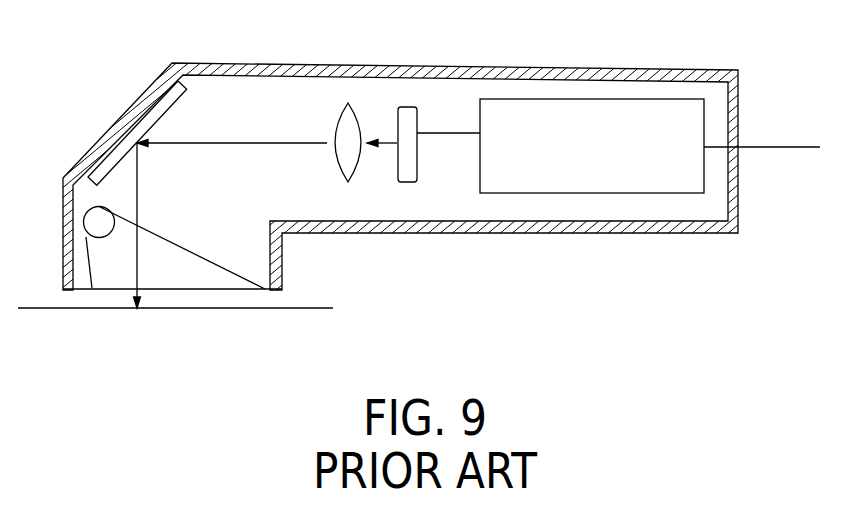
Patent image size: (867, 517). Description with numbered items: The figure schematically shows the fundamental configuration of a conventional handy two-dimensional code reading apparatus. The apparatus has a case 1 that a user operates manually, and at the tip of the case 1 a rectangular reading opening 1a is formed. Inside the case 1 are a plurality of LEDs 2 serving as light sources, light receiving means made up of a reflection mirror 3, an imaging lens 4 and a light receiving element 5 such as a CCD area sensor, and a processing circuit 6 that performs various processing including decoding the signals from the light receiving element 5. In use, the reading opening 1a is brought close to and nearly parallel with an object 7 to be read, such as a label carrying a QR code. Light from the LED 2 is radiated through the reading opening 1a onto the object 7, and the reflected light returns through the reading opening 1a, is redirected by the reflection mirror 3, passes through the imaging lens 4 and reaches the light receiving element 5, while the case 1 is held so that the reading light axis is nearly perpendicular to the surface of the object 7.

The case 1 is at (277, 63).
The reading opening 1a is at (242, 289).
The LED 2 is at (92, 223).
The reflection mirror 3 is at (197, 98).
The imaging lens 4 is at (352, 122).
The light receiving element 5 is at (407, 105).
The processing circuit 6 is at (620, 99).
The object to be read 7 is at (37, 308).